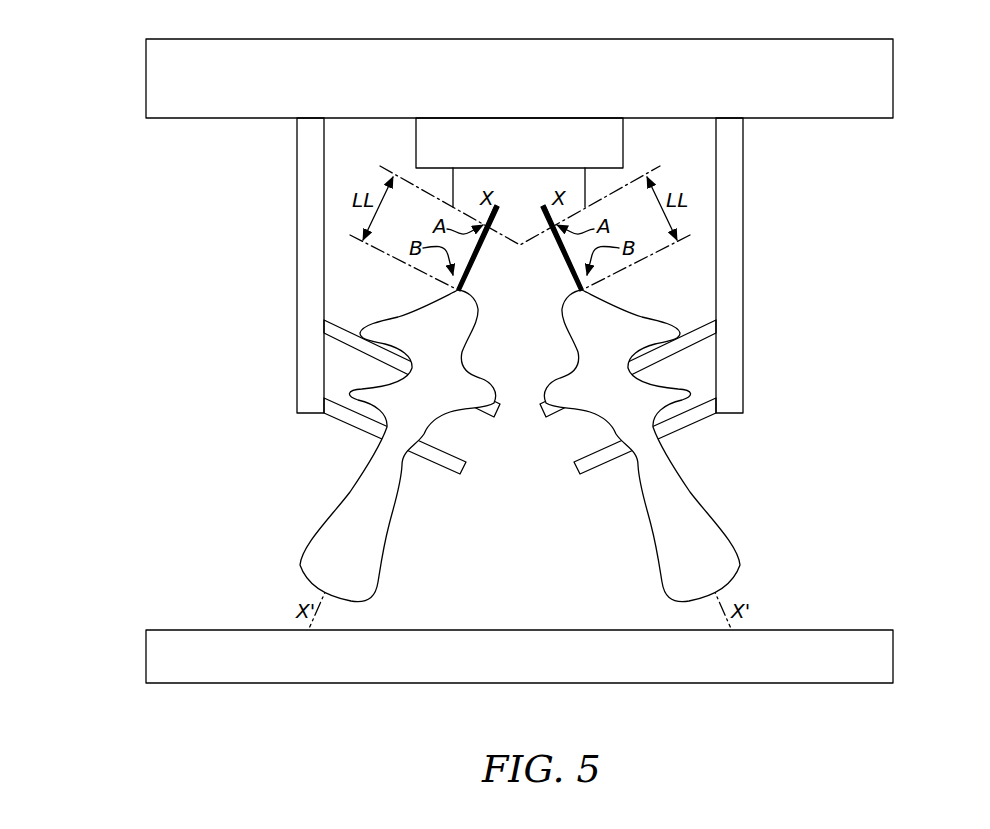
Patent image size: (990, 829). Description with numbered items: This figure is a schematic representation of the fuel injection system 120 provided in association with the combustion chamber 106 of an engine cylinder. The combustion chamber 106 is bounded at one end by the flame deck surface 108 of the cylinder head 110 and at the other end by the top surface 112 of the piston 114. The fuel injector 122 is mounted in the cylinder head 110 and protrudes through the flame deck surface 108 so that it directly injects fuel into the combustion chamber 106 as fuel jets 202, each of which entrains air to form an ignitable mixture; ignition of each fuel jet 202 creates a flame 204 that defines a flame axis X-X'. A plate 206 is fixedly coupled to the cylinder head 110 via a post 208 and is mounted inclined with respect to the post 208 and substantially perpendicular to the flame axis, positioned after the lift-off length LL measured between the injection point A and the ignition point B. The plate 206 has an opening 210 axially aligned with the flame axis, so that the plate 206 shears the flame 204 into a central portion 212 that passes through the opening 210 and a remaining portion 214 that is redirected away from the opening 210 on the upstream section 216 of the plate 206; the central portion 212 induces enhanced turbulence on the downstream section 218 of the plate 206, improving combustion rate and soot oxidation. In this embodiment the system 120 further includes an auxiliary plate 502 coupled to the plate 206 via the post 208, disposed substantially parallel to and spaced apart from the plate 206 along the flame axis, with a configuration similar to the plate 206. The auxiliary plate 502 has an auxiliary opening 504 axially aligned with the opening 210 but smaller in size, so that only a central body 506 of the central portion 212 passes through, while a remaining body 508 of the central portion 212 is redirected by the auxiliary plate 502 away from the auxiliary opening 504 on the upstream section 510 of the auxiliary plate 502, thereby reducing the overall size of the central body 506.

The combustion chamber 106 is at (538, 588).
The flame deck surface 108 is at (551, 99).
The cylinder head 110 is at (538, 89).
The top surface 112 is at (546, 630).
The piston 114 is at (538, 666).
The fuel injection system 120 is at (520, 265).
The fuel injector 122 is at (538, 154).
The fuel jet 202 is at (570, 273).
The flame 204 is at (417, 290).
The plate 206 is at (353, 327).
The post 208 is at (297, 178).
The opening 210 is at (355, 351).
The central portion 212 is at (394, 382).
The remaining portion 214 is at (557, 369).
The upstream section 216 is at (383, 307).
The downstream section 218 is at (585, 417).
The auxiliary plate 502 is at (345, 420).
The auxiliary opening 504 is at (358, 431).
The central body 506 is at (337, 502).
The remaining body 508 is at (568, 453).
The upstream section 510 is at (368, 392).